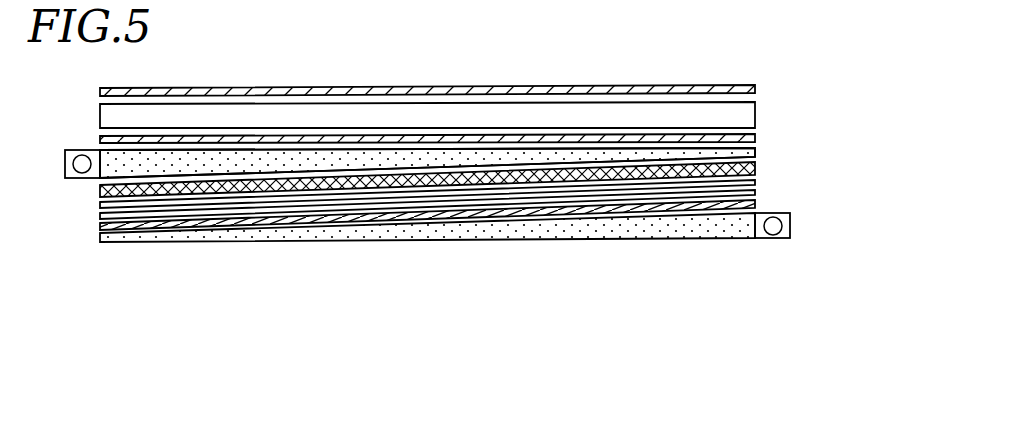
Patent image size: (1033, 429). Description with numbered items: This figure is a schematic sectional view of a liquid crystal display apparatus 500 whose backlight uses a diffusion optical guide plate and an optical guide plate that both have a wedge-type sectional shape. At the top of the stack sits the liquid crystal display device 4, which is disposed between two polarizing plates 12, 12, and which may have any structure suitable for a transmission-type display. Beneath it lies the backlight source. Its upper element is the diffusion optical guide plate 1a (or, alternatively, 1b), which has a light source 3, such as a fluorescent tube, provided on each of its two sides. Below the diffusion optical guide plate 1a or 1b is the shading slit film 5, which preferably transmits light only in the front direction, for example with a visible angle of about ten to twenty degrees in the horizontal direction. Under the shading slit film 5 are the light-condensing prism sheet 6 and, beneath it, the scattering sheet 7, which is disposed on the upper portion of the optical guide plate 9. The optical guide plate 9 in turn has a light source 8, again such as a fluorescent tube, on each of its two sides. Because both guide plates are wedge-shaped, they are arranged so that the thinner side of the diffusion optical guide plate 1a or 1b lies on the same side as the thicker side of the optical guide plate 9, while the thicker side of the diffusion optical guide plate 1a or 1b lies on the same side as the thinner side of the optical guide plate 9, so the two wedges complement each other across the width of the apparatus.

The liquid crystal display apparatus 500 is at (822, 90).
The diffusion optical guide plate 1a is at (757, 156).
The diffusion optical guide plate 1b is at (427, 163).
The light source 3 is at (80, 181).
The liquid crystal display device 4 is at (107, 117).
The shading slit film 5 is at (758, 163).
The light-condensing prism sheet 6 is at (757, 193).
The scattering sheet 7 is at (757, 203).
The light source 8 is at (782, 226).
The optical guide plate 9 is at (730, 228).
The polarizing plate 12 is at (145, 87).